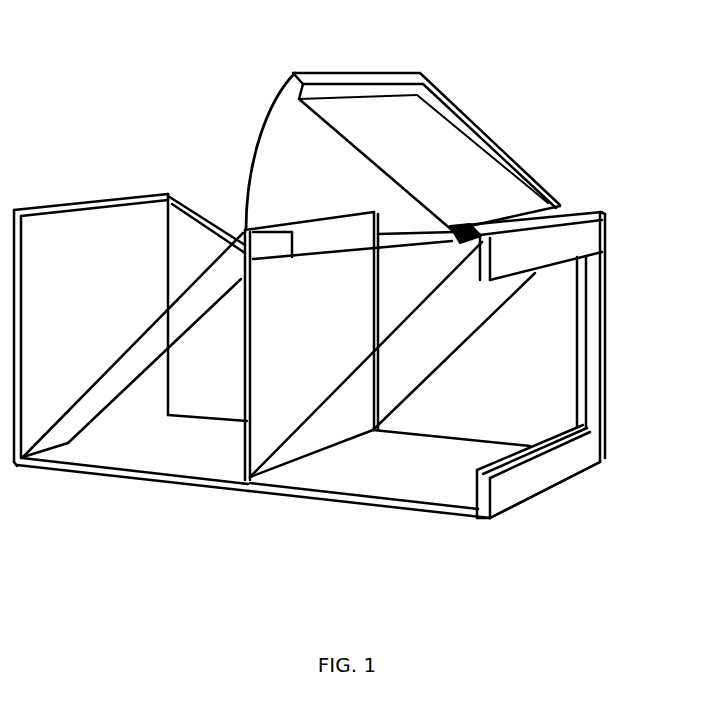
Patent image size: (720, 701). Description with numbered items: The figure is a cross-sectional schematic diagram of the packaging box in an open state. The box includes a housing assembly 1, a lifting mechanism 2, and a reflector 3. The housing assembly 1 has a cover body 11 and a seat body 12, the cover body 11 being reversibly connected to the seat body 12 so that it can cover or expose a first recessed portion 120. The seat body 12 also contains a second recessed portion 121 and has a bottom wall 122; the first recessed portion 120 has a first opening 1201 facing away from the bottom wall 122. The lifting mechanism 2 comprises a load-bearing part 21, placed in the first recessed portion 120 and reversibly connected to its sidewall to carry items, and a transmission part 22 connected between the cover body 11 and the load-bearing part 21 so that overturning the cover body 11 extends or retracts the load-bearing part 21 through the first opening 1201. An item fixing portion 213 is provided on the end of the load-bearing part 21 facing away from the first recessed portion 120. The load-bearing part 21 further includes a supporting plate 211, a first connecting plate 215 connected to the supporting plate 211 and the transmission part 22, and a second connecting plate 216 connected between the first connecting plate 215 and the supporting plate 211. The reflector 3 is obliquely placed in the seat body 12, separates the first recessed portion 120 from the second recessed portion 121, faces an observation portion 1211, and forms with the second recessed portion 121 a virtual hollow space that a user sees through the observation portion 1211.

The housing assembly 1 is at (163, 570).
The cover body 11 is at (168, 458).
The seat body 12 is at (347, 472).
The first recessed portion 120 is at (393, 300).
The first opening 1201 is at (430, 257).
The second recessed portion 121 is at (513, 385).
The observation portion 1211 is at (542, 432).
The bottom wall 122 is at (483, 455).
The lifting mechanism 2 is at (162, 114).
The load-bearing part 21 is at (258, 210).
The transmission part 22 is at (170, 247).
The supporting plate 211 is at (347, 78).
The item fixing portion 213 is at (450, 153).
The first connecting plate 215 is at (277, 138).
The second connecting plate 216 is at (433, 240).
The reflector 3 is at (373, 410).